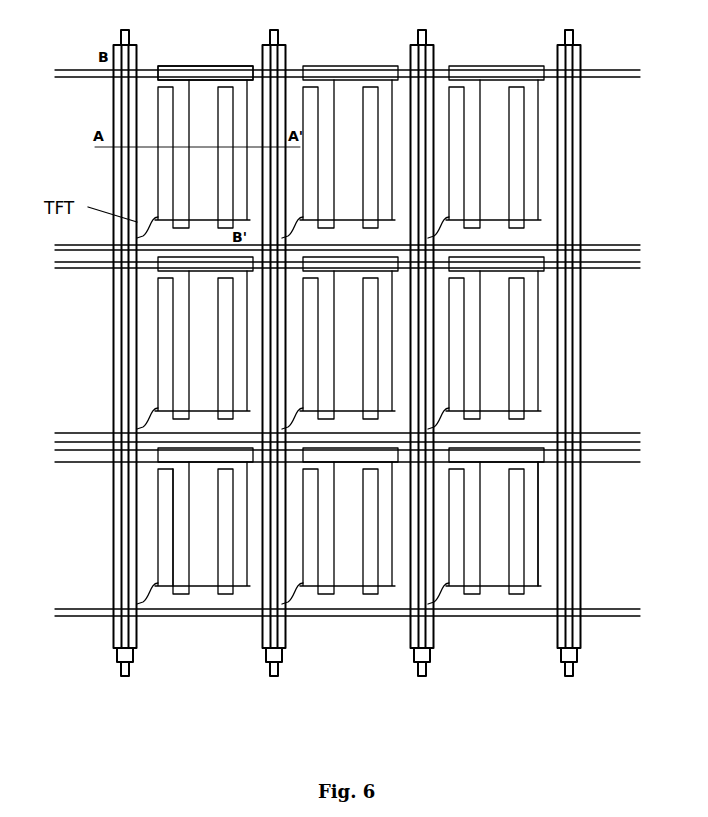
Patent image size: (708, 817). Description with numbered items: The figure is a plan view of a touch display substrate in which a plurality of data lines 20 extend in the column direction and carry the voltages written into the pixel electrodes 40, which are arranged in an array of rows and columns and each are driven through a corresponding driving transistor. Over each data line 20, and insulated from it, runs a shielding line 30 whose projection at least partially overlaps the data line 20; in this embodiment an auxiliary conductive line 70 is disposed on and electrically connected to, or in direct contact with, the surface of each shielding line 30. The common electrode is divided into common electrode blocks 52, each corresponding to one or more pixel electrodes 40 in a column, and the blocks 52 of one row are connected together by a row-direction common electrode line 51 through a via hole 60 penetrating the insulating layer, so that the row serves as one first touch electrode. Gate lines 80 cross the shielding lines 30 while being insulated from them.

The data line 20 is at (566, 672).
The shielding line 30 is at (578, 545).
The pixel electrode 40 is at (538, 507).
The common electrode line 51 is at (68, 463).
The common electrode block 52 is at (172, 522).
The via hole 60 is at (195, 70).
The auxiliary conductive line 70 is at (581, 648).
The gate line 80 is at (612, 620).